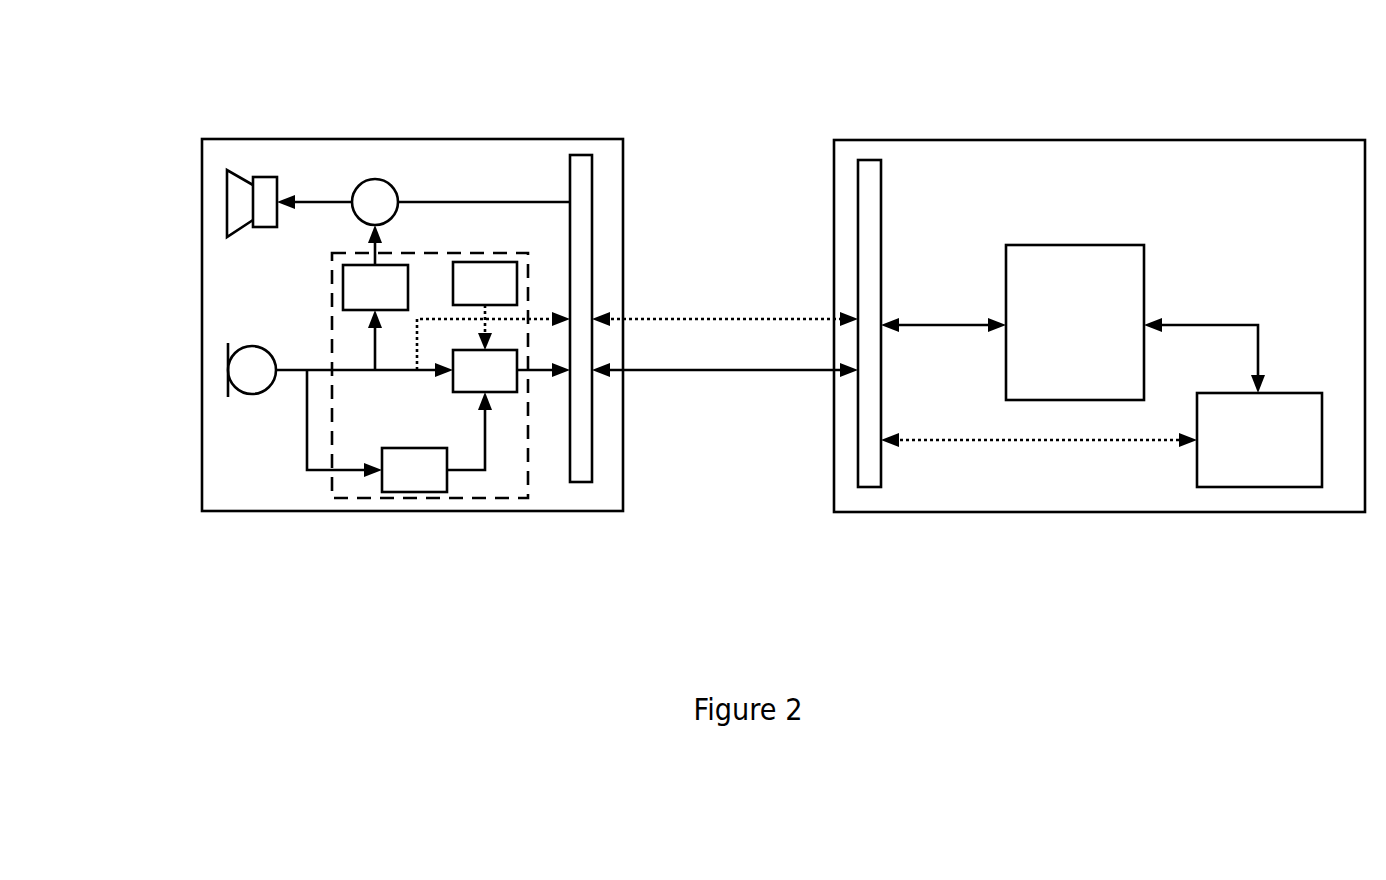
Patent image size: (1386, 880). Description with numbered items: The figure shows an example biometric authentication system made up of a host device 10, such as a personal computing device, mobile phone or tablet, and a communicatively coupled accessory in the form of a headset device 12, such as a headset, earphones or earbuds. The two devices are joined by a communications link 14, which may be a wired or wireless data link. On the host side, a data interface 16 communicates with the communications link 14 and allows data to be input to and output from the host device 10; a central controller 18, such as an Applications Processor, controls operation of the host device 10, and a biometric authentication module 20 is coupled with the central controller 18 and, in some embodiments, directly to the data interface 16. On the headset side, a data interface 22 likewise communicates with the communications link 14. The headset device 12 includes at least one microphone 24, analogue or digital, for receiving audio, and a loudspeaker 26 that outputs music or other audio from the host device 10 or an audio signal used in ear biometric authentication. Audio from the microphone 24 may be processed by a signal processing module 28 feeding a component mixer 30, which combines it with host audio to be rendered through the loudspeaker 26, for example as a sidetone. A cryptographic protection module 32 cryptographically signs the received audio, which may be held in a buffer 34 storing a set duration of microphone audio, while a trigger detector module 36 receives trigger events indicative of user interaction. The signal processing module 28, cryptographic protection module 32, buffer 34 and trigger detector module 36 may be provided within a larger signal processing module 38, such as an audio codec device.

The host device 10 is at (1102, 157).
The headset device 12 is at (258, 508).
The communications link 14 is at (724, 404).
The data interface 16 is at (865, 463).
The central controller 18 is at (1117, 270).
The biometric authentication module 20 is at (1280, 468).
The data interface 22 is at (575, 192).
The microphone 24 is at (248, 378).
The loudspeaker 26 is at (268, 183).
The signal processing module 28 is at (358, 290).
The component mixer 30 is at (380, 200).
The cryptographic protection module 32 is at (513, 385).
The buffer 34 is at (403, 482).
The trigger detector module 36 is at (485, 306).
The larger signal processing module 38 is at (467, 502).